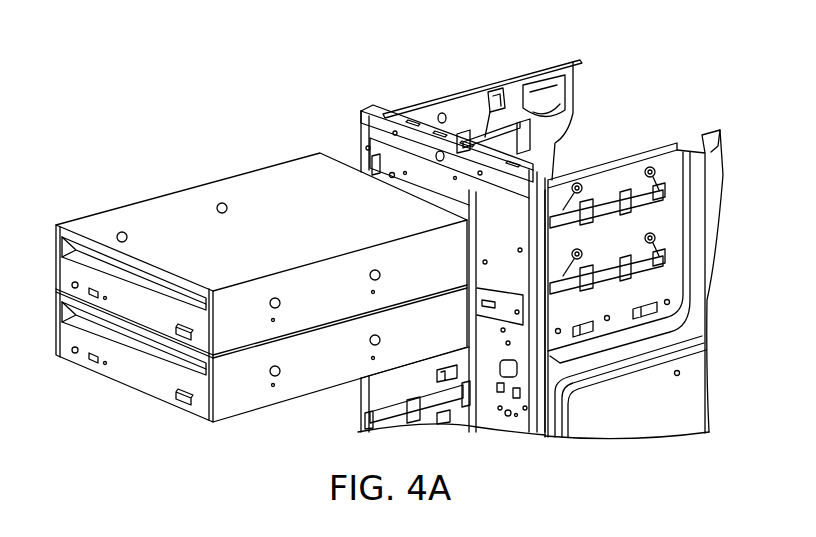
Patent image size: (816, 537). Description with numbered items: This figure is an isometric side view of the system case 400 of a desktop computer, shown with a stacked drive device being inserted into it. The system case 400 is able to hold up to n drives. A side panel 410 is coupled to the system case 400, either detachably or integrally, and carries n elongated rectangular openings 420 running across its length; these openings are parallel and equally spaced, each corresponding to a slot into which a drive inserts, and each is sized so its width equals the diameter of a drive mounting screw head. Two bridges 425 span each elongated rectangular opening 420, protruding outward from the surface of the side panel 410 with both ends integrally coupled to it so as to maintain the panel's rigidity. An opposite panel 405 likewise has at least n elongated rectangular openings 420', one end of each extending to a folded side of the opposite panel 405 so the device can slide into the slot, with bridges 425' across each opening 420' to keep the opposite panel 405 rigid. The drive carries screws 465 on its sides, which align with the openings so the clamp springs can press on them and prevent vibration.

The system case 400 is at (364, 110).
The opposite panel 405 is at (577, 60).
The side panel 410 is at (660, 145).
The elongated rectangular opening 420 is at (633, 201).
The bridge 425 is at (607, 208).
The elongated rectangular opening 420' is at (490, 89).
The bridge 425' is at (473, 108).
The screw 465 is at (280, 378).